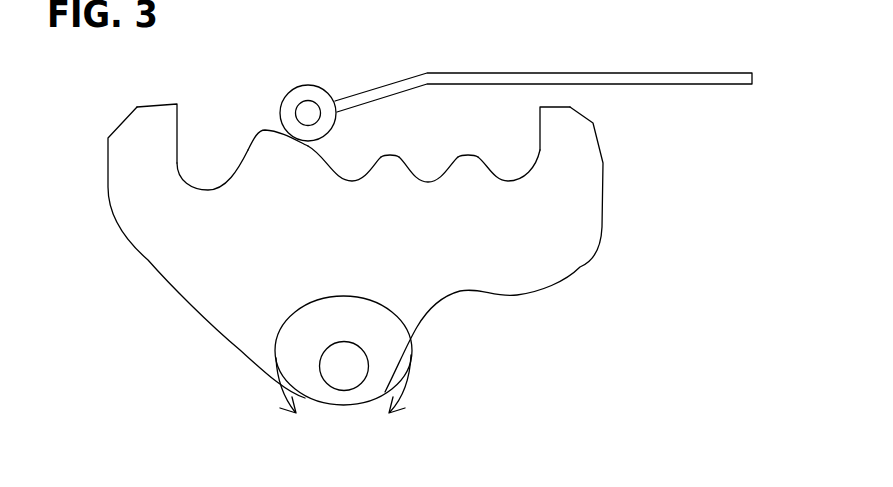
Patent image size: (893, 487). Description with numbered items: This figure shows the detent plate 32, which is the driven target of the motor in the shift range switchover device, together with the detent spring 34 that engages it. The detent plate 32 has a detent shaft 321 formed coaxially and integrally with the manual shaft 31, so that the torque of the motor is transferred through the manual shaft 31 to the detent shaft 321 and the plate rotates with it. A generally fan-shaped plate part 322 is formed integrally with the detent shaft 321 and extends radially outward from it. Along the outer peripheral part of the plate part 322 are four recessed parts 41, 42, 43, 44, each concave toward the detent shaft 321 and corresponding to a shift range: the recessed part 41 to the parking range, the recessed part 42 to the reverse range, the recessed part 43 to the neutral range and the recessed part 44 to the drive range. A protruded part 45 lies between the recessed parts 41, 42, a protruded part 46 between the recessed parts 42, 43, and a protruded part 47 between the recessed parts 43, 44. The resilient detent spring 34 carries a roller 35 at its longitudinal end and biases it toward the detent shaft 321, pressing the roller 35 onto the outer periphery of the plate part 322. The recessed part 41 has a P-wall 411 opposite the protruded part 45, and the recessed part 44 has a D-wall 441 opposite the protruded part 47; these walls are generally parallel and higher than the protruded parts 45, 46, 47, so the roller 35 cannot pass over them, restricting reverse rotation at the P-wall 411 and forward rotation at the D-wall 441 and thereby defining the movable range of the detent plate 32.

The manual shaft 31 is at (343, 409).
The detent shaft 321 is at (345, 383).
The detent plate 32 is at (347, 266).
The plate part 322 is at (202, 300).
The detent spring 34 is at (672, 82).
The roller 35 is at (306, 86).
The recessed part 41 is at (209, 188).
The P-wall 411 is at (178, 118).
The recessed part 42 is at (352, 179).
The recessed part 43 is at (428, 180).
The recessed part 44 is at (508, 179).
The D-wall 441 is at (538, 118).
The protruded part 45 is at (263, 128).
The protruded part 46 is at (390, 154).
The protruded part 47 is at (468, 154).